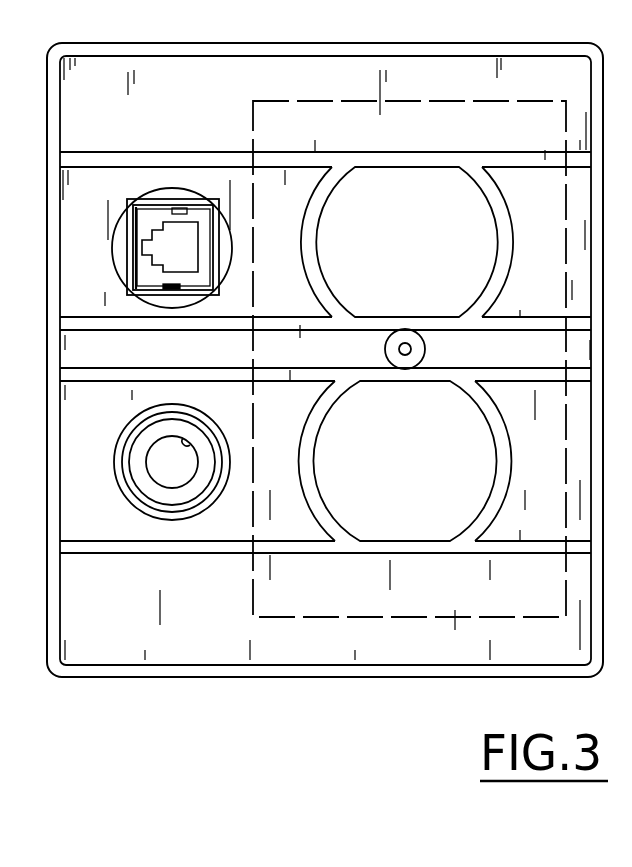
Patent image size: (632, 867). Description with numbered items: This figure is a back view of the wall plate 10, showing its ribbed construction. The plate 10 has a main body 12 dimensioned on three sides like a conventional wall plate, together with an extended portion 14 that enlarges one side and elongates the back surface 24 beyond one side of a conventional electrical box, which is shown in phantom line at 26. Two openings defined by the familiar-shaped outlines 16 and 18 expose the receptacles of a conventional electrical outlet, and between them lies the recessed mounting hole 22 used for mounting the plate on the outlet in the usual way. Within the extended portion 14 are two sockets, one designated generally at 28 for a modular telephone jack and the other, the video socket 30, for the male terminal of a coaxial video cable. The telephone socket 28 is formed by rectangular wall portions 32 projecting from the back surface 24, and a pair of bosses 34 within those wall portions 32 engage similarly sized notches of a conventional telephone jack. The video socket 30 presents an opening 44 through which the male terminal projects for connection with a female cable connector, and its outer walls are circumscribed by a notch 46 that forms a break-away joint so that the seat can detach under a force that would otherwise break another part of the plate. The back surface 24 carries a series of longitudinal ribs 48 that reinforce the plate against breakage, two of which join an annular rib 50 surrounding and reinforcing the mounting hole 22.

The plate 10 is at (548, 37).
The main body 12 is at (519, 90).
The extended portion 14 is at (68, 88).
The outline 16 is at (327, 200).
The outline 18 is at (337, 403).
The recessed mounting hole 22 is at (426, 349).
The back surface 24 is at (188, 643).
The electrical box 26 is at (565, 240).
The socket 28 is at (168, 180).
The video socket 30 is at (161, 527).
The rectangular wall portions 32 is at (219, 266).
The bosses 34 is at (137, 284).
The opening 44 is at (188, 445).
The notch 46 is at (208, 493).
The longitudinal ribs 48 is at (193, 160).
The annular rib 50 is at (387, 346).